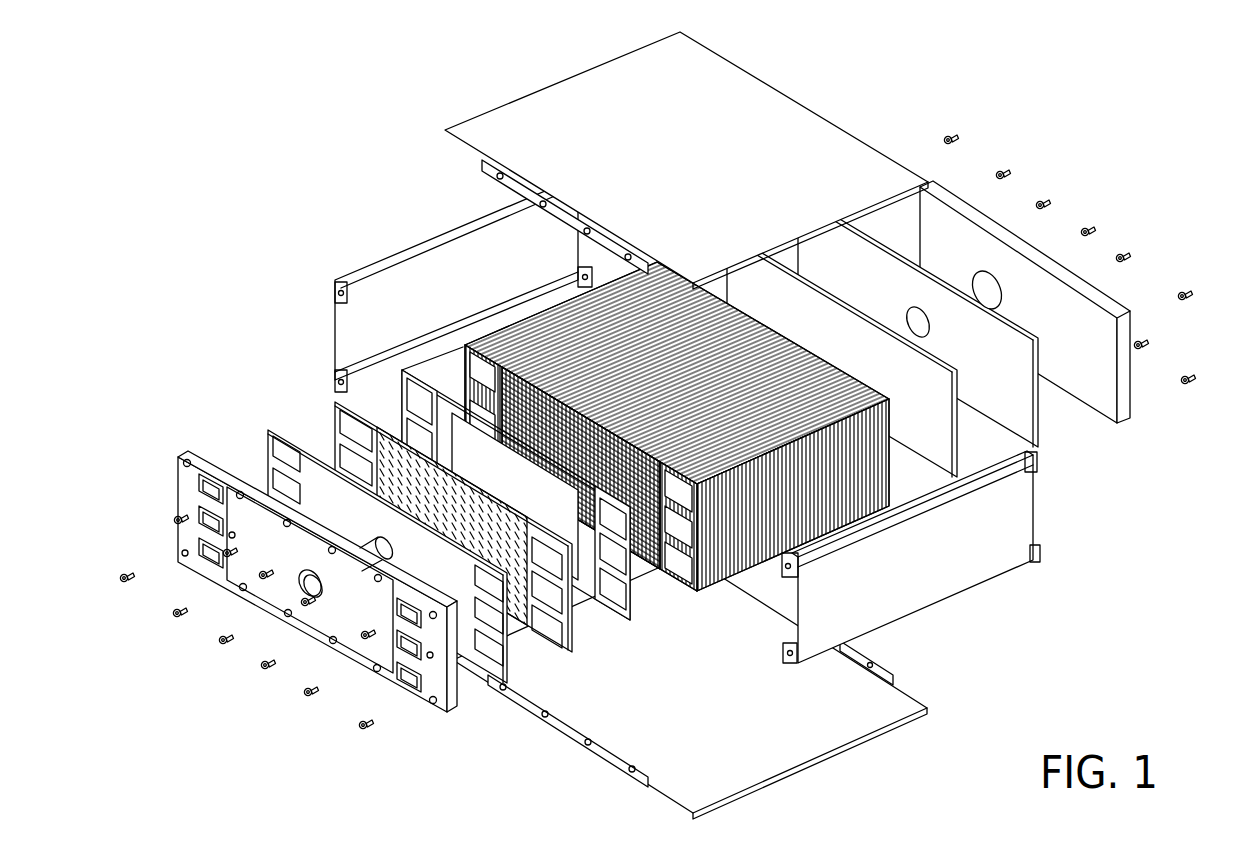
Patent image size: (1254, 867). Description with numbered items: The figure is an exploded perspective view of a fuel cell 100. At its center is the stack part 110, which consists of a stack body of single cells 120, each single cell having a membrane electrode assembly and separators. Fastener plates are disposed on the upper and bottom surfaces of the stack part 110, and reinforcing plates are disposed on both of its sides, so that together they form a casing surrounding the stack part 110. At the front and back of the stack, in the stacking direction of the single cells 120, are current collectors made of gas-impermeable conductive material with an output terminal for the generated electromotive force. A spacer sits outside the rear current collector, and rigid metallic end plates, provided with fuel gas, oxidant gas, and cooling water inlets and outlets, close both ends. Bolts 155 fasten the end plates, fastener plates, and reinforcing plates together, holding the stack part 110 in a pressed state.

The fuel cell 100 is at (179, 108).
The stack part 110 is at (727, 632).
The single cell 120 is at (711, 598).
The bolt 155 is at (957, 138).